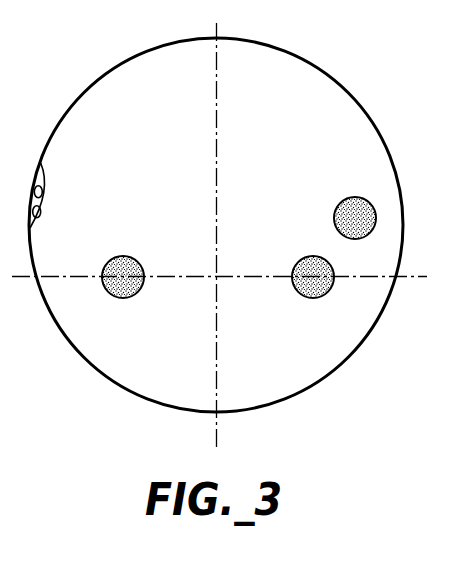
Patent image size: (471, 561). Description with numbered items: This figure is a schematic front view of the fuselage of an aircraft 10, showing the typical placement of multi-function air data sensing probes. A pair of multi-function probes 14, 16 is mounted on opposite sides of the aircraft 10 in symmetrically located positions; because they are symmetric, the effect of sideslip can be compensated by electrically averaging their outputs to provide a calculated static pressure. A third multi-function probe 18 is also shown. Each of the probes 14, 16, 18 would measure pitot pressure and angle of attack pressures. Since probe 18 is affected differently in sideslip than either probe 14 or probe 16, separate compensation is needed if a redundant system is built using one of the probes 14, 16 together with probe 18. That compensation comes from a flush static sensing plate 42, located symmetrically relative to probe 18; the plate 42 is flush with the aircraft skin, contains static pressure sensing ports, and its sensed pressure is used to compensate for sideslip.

The aircraft 10 is at (340, 368).
The multi-function air data sensing probe 14 is at (312, 298).
The multi-function air data sensing probe 16 is at (123, 298).
The third multi-function probe 18 is at (357, 198).
The flush static sensing plate 42 is at (48, 198).